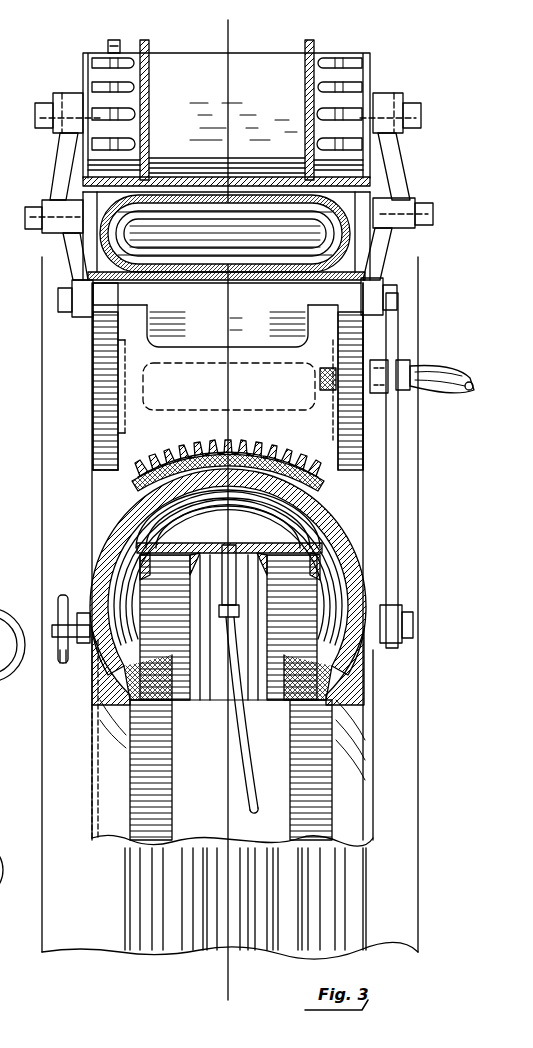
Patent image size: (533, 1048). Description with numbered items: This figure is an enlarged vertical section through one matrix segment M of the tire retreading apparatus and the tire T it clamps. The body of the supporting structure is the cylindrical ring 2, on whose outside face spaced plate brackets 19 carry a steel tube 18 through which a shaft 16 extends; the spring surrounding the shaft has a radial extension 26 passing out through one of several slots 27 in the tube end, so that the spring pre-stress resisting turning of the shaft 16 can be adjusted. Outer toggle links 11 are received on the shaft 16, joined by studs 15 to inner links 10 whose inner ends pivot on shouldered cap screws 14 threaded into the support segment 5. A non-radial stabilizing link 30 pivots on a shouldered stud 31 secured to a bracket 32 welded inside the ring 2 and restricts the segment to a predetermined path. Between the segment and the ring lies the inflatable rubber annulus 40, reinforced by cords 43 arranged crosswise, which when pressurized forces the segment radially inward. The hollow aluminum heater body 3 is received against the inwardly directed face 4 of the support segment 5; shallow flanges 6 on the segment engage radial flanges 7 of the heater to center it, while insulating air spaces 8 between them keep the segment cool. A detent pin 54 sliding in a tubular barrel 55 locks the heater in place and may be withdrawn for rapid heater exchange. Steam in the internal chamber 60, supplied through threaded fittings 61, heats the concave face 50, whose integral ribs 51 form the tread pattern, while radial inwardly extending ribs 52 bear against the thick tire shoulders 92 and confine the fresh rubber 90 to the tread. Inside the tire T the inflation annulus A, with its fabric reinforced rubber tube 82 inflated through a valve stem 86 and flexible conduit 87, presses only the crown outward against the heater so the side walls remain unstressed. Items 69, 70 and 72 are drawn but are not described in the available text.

The circular ring 2 is at (420, 765).
The hollow heater body 3 is at (118, 427).
The inwardly directed face 4 is at (247, 32).
The support segment 5 is at (80, 318).
The shallow inwardly directed flange 6 is at (95, 350).
The radial flange 7 is at (133, 314).
The insulating air space 8 is at (227, 324).
The inner link 10 is at (68, 254).
The outer link 11 is at (58, 165).
The shouldered cap screw 14 is at (58, 298).
The stud or bolt 15 is at (30, 217).
The shaft 16 is at (35, 118).
The cylindrical tube or barrel 18 is at (266, 53).
The plate bracket 19 is at (145, 40).
The radial extension 26 is at (108, 42).
The slot 27 is at (130, 86).
The stabilizing link 30 is at (398, 520).
The shouldered stud 31 is at (413, 350).
The bracket 32 is at (407, 306).
The inflatable annulus 40 is at (283, 147).
The cord 43 is at (328, 222).
The concave face 50 is at (176, 452).
The rib 51 is at (286, 452).
The radial inwardly extending rib 52 is at (120, 492).
The detent pin 54 is at (52, 627).
The tubular barrel 55 is at (69, 668).
The internal steam chamber 60 is at (229, 386).
The threaded fitting 61 is at (378, 393).
The ring 69 is at (12, 662).
The ring 70 is at (10, 873).
The element 72 is at (10, 1016).
The inflatable annular rubber tube 82 is at (222, 504).
The valve stem 86 is at (232, 520).
The flexible conduit 87 is at (246, 727).
The fresh rubber 90 is at (223, 440).
The shoulder 92 is at (130, 470).
The matrix segment M is at (118, 382).
The tire T is at (90, 542).
The inflation annulus A is at (330, 579).